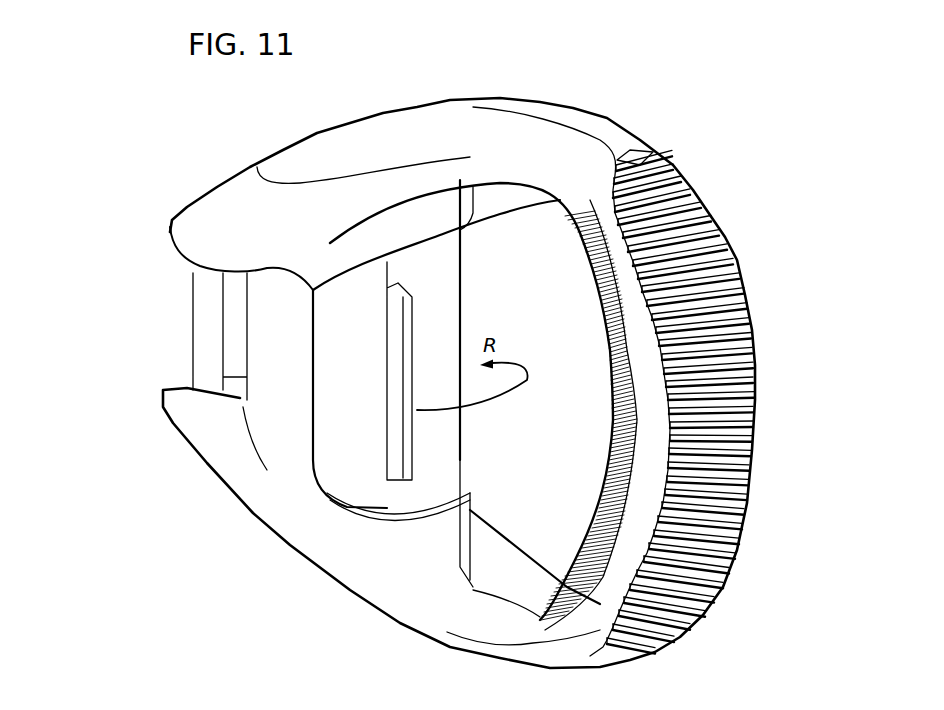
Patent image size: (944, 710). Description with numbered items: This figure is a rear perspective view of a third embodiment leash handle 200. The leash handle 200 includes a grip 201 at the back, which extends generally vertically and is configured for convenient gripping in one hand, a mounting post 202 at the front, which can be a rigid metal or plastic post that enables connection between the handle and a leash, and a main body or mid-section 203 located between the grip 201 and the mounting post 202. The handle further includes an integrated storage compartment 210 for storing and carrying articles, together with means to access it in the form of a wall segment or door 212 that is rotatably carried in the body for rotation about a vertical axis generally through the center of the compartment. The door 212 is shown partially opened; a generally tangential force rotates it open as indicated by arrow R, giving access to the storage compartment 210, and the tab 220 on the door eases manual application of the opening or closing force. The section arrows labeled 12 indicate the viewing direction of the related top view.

The section view arrows 12 is at (187, 317).
The leash handle 200 is at (550, 97).
The grip 201 is at (745, 295).
The mounting post 202 is at (187, 333).
The main body or mid-section 203 is at (280, 379).
The storage compartment 210 is at (353, 402).
The wall segment or door 212 is at (433, 437).
The tab 220 is at (397, 347).